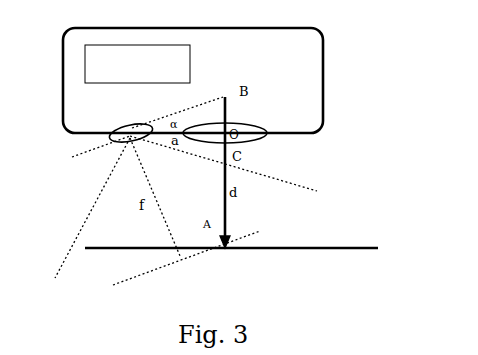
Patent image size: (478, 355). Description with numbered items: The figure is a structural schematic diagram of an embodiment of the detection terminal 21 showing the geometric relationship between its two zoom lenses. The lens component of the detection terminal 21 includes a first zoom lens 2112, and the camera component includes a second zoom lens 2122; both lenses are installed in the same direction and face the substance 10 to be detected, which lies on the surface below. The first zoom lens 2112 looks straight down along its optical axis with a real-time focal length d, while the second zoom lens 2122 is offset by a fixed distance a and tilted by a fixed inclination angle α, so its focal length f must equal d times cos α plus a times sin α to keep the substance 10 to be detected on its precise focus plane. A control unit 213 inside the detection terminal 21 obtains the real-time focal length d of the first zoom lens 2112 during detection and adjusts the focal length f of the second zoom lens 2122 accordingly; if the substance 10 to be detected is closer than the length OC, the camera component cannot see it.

The detection terminal 21 is at (248, 28).
The control unit 213 is at (135, 45).
The second zoom lens 2122 is at (122, 123).
The first zoom lens 2112 is at (256, 122).
The substance to be detected 10 is at (245, 250).